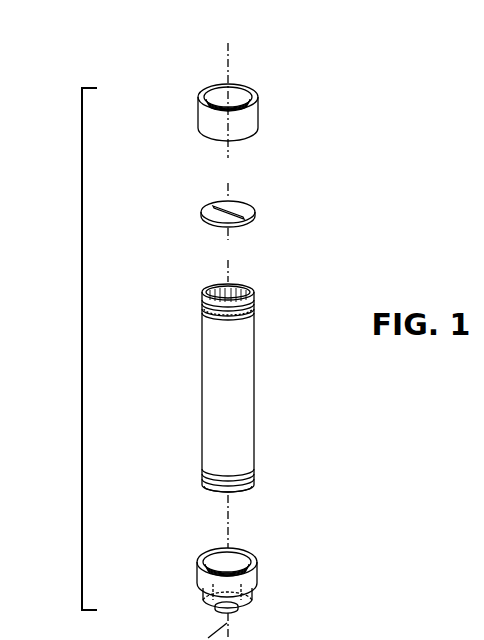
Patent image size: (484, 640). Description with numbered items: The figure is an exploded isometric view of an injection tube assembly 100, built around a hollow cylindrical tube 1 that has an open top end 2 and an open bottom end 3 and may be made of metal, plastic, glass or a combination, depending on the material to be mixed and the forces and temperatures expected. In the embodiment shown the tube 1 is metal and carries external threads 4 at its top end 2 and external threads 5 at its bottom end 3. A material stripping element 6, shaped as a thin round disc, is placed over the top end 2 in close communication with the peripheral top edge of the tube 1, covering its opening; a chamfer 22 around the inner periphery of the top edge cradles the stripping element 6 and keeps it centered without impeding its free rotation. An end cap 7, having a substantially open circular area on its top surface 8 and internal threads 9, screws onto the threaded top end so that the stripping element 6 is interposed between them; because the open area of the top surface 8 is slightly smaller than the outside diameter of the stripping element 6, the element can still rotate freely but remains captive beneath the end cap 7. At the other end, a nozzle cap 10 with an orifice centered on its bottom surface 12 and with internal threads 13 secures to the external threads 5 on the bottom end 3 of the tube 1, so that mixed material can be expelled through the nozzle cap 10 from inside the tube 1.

The injection tube assembly 100 is at (61, 349).
The hollow cylindrical tube 1 is at (215, 407).
The open top end 2 is at (232, 281).
The open bottom end 3 is at (226, 491).
The external threads 4 is at (204, 306).
The external threads 5 is at (204, 471).
The material stripping element 6 is at (203, 214).
The end cap 7 is at (212, 115).
The top surface 8 is at (207, 97).
The internal threads 9 is at (240, 92).
The nozzle cap 10 is at (200, 588).
The bottom surface 12 is at (238, 609).
The internal threads 13 is at (248, 557).
The chamfer 22 is at (207, 290).